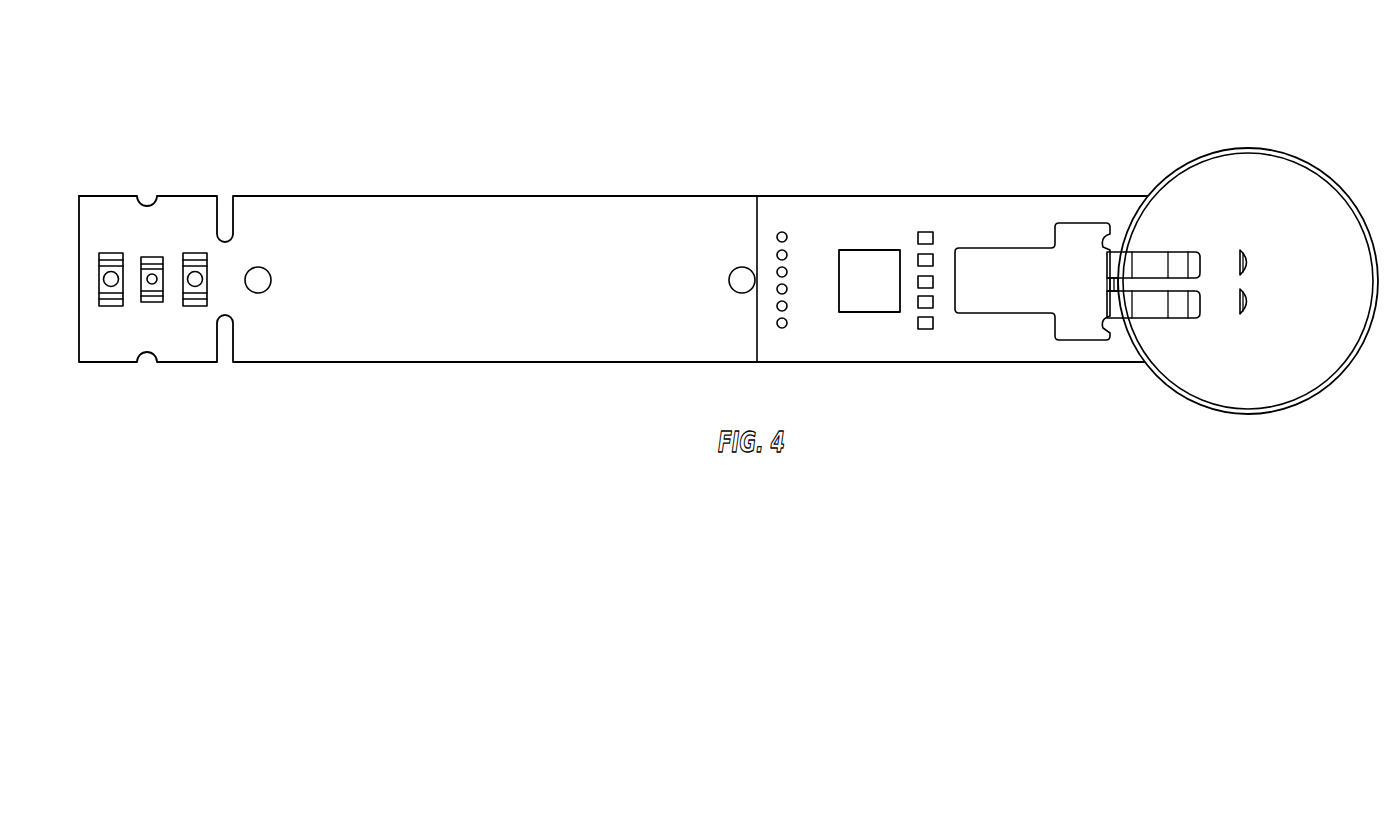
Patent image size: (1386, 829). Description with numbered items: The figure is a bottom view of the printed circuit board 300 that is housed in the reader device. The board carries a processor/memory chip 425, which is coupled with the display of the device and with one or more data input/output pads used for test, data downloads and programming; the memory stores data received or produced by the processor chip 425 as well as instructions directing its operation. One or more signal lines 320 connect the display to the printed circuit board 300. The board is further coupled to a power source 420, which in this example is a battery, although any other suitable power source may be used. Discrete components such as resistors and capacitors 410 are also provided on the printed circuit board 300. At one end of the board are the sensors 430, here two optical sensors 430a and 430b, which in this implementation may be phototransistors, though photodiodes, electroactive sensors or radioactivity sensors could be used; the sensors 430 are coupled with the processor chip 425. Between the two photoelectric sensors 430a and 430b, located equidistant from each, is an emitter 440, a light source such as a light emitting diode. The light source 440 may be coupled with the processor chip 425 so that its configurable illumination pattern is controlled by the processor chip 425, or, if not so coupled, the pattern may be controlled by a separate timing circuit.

The printed circuit board 300 is at (172, 89).
The signal lines 320 is at (790, 327).
The resistors and capacitors 410 is at (924, 230).
The power source 420 is at (1238, 168).
The processor/memory chip 425 is at (889, 294).
The sensors 430 is at (205, 155).
The optical sensor 430a is at (103, 253).
The optical sensor 430b is at (194, 253).
The emitter 440 is at (152, 302).